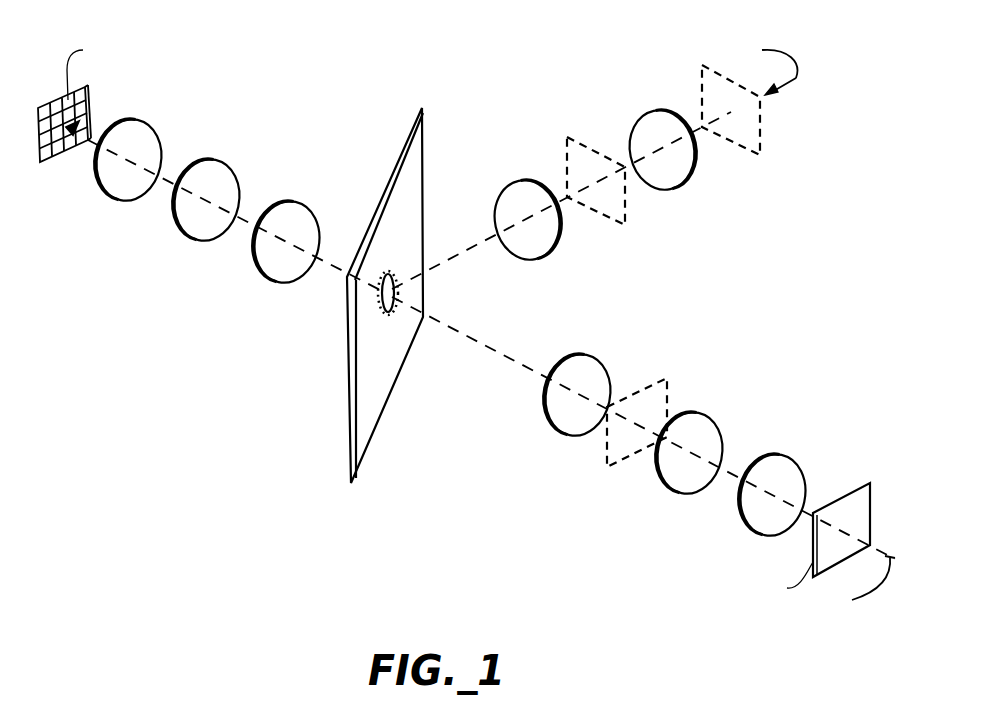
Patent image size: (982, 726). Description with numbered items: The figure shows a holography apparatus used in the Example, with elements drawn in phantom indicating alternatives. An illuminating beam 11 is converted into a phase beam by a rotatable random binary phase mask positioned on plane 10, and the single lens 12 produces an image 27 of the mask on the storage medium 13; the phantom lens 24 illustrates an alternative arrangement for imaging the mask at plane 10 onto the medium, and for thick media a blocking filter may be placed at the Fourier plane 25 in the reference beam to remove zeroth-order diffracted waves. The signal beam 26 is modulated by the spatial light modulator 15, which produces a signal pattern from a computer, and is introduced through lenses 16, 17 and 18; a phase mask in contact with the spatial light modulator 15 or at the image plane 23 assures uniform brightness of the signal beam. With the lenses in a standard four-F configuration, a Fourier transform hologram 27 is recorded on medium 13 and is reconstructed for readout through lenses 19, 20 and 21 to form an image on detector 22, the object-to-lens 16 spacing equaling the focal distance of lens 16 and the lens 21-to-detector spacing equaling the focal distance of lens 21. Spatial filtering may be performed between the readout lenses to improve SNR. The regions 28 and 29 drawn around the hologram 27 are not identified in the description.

The plane 10 is at (702, 88).
The illuminating beam 11 is at (765, 67).
The single lens 12 is at (547, 248).
The medium 13 is at (423, 155).
The spatial light modulator 15 is at (815, 528).
The lens 16 is at (780, 473).
The lens 17 is at (707, 433).
The lens 18 is at (595, 372).
The lens 19 is at (302, 225).
The lens 20 is at (223, 185).
The lens 21 is at (147, 145).
The detector 22 is at (84, 95).
The image plane 23 is at (663, 400).
The lens 24 is at (683, 177).
The Fourier plane 25 is at (625, 212).
The signal beam 26 is at (858, 584).
The Fourier transform hologram 27 is at (398, 280).
The filter region 28 is at (378, 296).
The annular region 29 is at (393, 318).